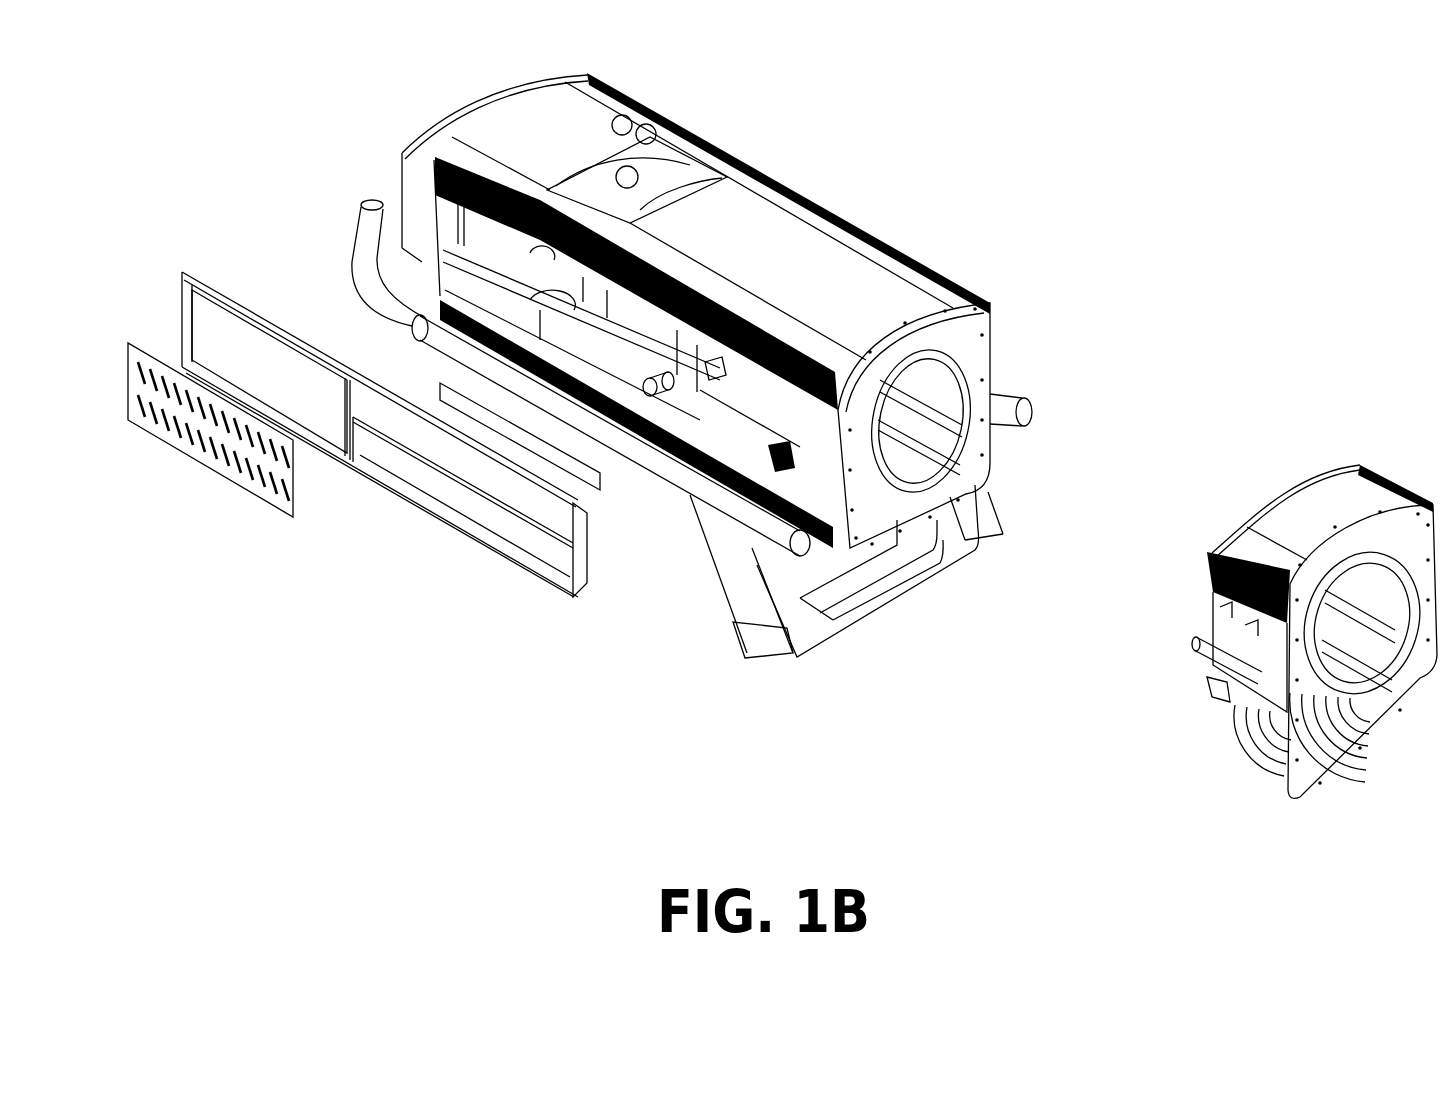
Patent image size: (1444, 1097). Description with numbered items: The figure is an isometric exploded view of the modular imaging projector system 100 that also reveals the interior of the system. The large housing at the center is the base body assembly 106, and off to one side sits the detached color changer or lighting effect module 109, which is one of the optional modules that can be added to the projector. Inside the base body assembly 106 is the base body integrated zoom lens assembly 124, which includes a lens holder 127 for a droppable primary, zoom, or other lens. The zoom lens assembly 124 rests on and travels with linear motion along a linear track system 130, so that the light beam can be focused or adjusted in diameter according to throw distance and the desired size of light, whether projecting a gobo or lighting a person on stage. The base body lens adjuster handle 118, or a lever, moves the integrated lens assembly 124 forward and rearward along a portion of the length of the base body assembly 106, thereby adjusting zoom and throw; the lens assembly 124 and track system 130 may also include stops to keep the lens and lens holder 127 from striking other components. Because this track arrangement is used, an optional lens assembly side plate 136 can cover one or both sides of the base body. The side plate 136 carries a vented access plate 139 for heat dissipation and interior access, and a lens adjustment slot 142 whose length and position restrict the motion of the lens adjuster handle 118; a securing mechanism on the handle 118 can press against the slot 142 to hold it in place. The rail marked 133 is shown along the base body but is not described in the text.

The modular imaging projector system 100 is at (292, 91).
The base body assembly 106 is at (923, 196).
The color changer or lighting effect module 109 is at (1280, 460).
The base body lens adjuster handle 118 is at (650, 395).
The base body integrated zoom lens assembly 124 is at (675, 375).
The lens holder 127 is at (716, 370).
The linear track system 130 is at (810, 458).
The rail 133 is at (750, 413).
The lens assembly side plate 136 is at (224, 258).
The vented access plate 139 is at (257, 488).
The lens adjustment slot 142 is at (433, 462).